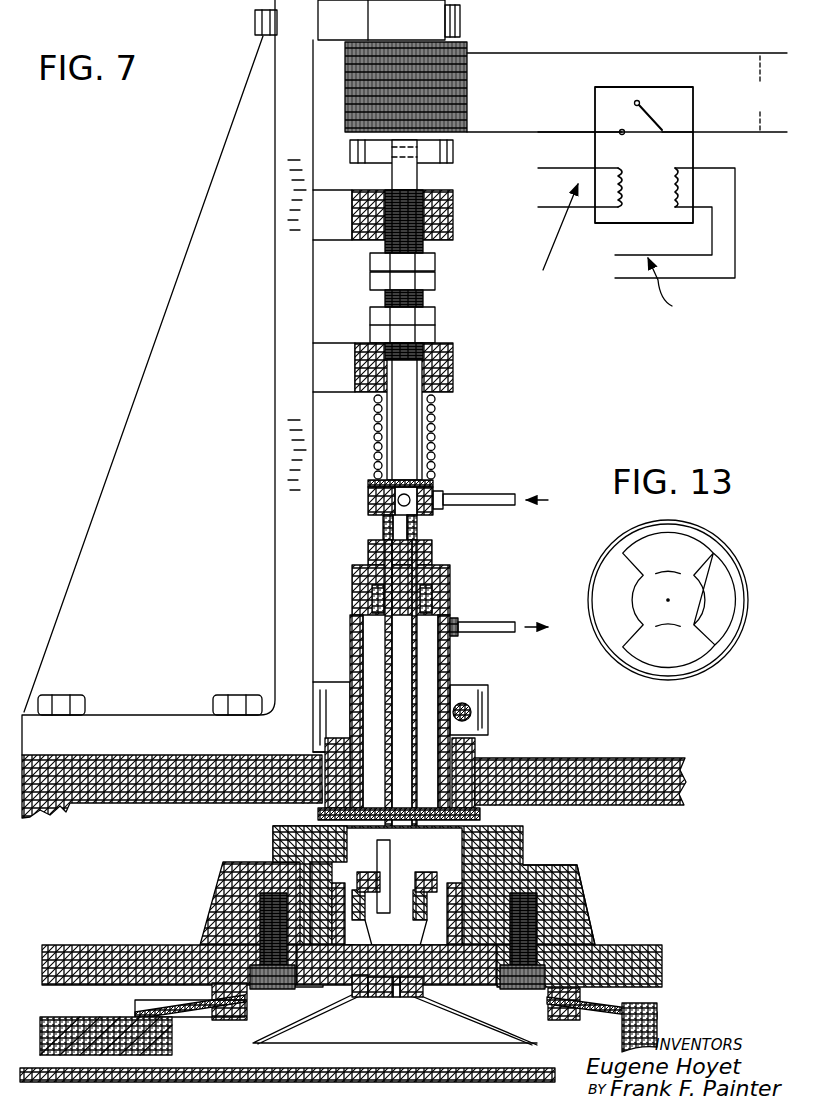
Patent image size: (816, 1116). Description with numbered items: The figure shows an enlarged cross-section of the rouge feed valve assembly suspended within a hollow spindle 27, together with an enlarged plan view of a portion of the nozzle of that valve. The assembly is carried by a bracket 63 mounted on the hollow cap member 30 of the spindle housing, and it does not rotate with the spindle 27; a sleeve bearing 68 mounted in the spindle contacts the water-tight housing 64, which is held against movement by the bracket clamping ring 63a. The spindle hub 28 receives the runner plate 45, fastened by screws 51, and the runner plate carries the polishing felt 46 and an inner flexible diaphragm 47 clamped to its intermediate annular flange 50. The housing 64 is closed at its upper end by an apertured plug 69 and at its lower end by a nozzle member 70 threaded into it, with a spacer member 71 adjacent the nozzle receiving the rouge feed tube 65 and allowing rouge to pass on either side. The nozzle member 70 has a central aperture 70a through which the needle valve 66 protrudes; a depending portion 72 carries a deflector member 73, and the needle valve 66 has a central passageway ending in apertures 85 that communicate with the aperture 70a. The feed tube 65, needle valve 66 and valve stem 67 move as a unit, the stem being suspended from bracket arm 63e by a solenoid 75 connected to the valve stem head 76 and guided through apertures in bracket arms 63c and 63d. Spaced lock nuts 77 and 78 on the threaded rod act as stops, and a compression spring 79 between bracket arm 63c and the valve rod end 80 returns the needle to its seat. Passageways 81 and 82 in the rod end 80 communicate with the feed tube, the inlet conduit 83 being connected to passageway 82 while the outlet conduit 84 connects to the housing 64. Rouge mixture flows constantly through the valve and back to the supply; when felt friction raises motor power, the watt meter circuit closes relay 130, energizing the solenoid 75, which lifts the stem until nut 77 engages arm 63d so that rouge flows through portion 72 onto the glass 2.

In FIG. 7, the glass 2 is at (62, 1082).
In FIG. 7, the spindle 27 is at (470, 748).
In FIG. 7, the spindle hub 28 is at (580, 880).
In FIG. 7, the hollow cap member 30 is at (618, 758).
In FIG. 7, the runner plate 45 is at (660, 948).
In FIG. 7, the polishing felt 46 is at (64, 1018).
In FIG. 7, the inner flexible diaphragm 47 is at (214, 1018).
In FIG. 7, the intermediate annular flange 50 is at (565, 985).
In FIG. 7, the screws 51 is at (262, 905).
In FIG. 7, the bracket 63 is at (100, 500).
In FIG. 7, the bracket clamping ring 63a is at (488, 705).
In FIG. 7, the bracket arm 63c is at (455, 366).
In FIG. 7, the bracket arm 63d is at (455, 206).
In FIG. 7, the bracket arm 63e is at (389, 20).
In FIG. 7, the housing 64 is at (451, 652).
In FIG. 7, the rouge feed tube 65 is at (418, 670).
In FIG. 7, the needle valve 66 is at (363, 994).
In FIG. 7, the valve stem 67 is at (408, 386).
In FIG. 7, the sleeve bearing 68 is at (343, 878).
In FIG. 7, the plug 69 is at (450, 572).
In FIG. 7, the nozzle member 70 is at (490, 880).
In FIG. 13, the nozzle member 70 is at (688, 672).
In FIG. 7, the central aperture 70a is at (357, 900).
In FIG. 13, the central aperture 70a is at (632, 625).
In FIG. 7, the spacer member 71 is at (486, 829).
In FIG. 7, the depending portion 72 is at (395, 998).
In FIG. 7, the deflector member 73 is at (452, 1000).
In FIG. 7, the solenoid 75 is at (455, 78).
In FIG. 7, the valve stem head 76 is at (417, 172).
In FIG. 7, the lock nut 77 is at (440, 258).
In FIG. 7, the lock nut 78 is at (436, 320).
In FIG. 7, the compression spring 79 is at (424, 442).
In FIG. 7, the valve rod end 80 is at (368, 497).
In FIG. 7, the connecting passageway 81 is at (383, 527).
In FIG. 7, the connecting passageway 82 is at (435, 482).
In FIG. 7, the rouge mixture inlet conduit 83 is at (475, 506).
In FIG. 7, the rouge mixture outlet conduit 84 is at (486, 624).
In FIG. 7, the apertures 85 is at (405, 912).
In FIG. 7, the relay 130 is at (648, 104).